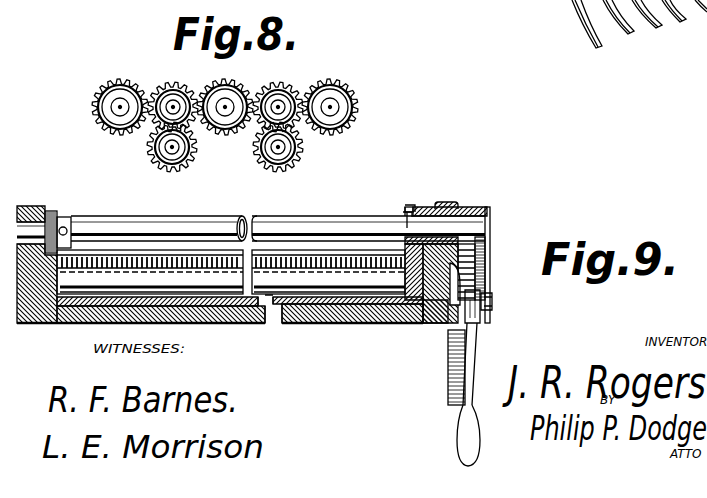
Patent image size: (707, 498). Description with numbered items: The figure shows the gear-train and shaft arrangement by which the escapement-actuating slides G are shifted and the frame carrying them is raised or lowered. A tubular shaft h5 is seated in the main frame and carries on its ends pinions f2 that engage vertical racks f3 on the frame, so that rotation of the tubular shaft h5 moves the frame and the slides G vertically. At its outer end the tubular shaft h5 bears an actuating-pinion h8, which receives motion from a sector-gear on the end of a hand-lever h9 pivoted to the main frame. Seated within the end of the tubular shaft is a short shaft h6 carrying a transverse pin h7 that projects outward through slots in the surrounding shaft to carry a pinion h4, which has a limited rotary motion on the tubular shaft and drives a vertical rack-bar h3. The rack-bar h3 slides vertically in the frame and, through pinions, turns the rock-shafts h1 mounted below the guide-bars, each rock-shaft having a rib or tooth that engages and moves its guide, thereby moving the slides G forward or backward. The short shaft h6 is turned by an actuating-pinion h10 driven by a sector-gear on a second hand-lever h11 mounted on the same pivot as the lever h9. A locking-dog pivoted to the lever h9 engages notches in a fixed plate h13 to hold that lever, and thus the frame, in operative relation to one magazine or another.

The escapement-actuating slides G is at (262, 291).
The pinions f2 is at (50, 211).
The vertical racks f3 is at (62, 255).
The tubular shaft h5 is at (212, 217).
The vertical rack-bar h3 is at (410, 240).
The transverse pin h7 is at (404, 213).
The pinion h4 is at (413, 203).
The actuating-pinion h8 is at (463, 207).
The actuating-pinion h10 is at (480, 208).
The short shaft h6 is at (490, 226).
The hand-lever h9 is at (462, 333).
The fixed plate h13 is at (455, 382).
The hand-lever h11 is at (484, 320).
The rock-shaft h1 is at (383, 294).